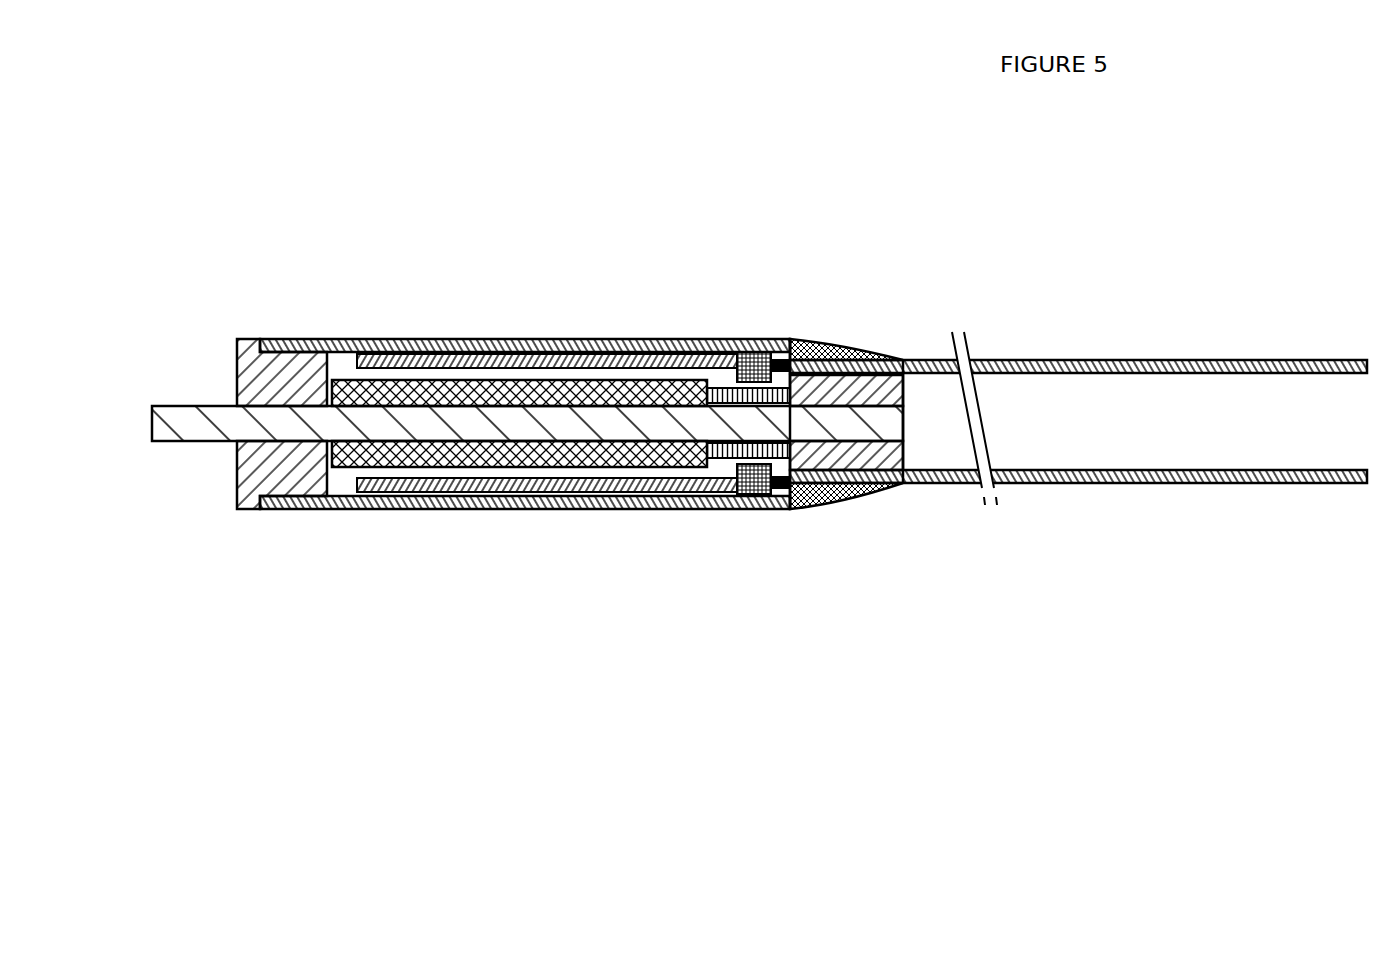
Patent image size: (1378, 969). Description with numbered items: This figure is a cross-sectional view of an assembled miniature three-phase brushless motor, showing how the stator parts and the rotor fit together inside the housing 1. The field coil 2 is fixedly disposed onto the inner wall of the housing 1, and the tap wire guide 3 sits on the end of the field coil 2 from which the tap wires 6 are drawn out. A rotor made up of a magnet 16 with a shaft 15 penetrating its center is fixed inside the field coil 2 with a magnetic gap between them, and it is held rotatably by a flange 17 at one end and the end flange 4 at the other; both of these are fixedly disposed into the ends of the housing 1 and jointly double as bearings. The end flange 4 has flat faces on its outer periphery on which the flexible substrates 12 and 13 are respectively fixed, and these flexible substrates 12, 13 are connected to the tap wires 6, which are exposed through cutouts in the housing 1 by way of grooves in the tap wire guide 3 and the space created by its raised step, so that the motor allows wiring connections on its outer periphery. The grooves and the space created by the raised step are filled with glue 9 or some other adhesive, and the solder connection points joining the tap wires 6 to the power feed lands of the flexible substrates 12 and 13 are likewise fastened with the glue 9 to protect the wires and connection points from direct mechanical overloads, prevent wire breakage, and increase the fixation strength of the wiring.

The housing 1 is at (500, 505).
The field coil 2 is at (590, 345).
The tap wire guide 3 is at (758, 358).
The end flange 4 is at (855, 392).
The tap wires 6 is at (745, 488).
The glue 9 is at (788, 505).
The flexible substrate 12 is at (1082, 368).
The flexible substrate 13 is at (1118, 477).
The shaft 15 is at (368, 427).
The magnet 16 is at (405, 387).
The flange 17 is at (267, 377).